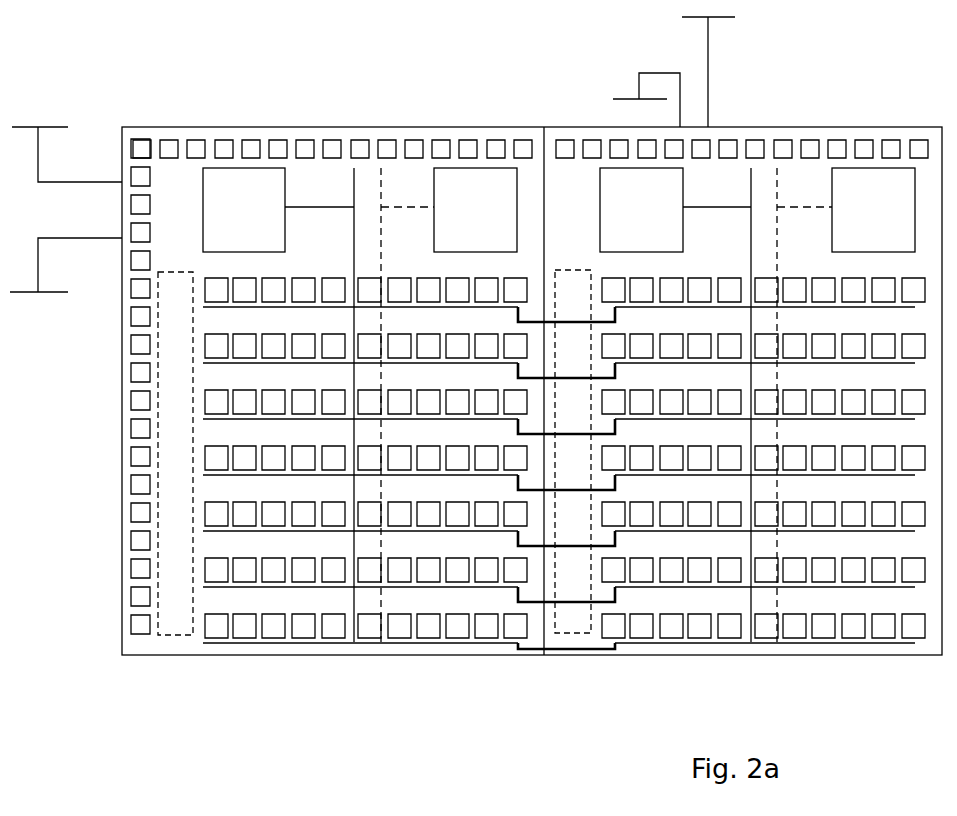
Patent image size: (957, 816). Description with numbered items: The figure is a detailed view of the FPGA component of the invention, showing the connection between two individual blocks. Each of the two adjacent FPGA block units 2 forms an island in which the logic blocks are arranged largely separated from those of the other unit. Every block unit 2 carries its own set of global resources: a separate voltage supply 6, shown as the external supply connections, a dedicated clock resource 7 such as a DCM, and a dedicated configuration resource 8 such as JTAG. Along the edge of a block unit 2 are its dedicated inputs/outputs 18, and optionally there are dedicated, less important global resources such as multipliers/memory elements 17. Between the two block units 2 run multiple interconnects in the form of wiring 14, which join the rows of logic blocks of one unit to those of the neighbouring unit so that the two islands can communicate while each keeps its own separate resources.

The FPGA block unit 2 is at (327, 647).
The voltage supply 6 is at (75, 211).
The clock resource 7 is at (257, 175).
The configuration resource 8 is at (472, 175).
The wiring 14 is at (548, 652).
The multipliers/memory elements 17 is at (165, 538).
The inputs/outputs 18 is at (140, 430).